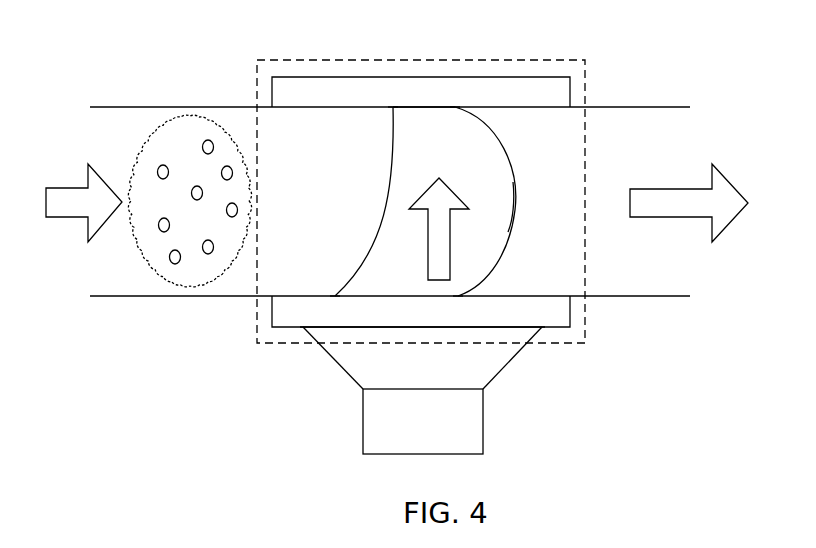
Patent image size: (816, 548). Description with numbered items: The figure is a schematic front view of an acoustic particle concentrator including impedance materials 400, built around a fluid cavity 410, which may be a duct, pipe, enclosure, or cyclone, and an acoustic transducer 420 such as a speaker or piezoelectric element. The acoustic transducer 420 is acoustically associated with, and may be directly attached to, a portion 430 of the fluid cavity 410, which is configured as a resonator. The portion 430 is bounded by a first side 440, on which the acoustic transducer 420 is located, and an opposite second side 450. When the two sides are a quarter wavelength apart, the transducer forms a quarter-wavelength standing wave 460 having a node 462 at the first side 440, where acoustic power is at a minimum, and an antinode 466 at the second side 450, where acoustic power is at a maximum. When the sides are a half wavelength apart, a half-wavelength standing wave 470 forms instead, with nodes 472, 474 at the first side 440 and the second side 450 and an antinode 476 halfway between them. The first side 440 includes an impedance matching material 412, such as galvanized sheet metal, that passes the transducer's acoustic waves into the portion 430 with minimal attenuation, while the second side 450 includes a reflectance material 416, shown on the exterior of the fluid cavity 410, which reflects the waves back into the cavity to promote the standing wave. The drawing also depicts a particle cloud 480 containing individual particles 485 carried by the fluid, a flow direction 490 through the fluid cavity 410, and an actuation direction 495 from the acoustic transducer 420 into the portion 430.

The acoustic particle concentrator including impedance materials 400 is at (660, 45).
The fluid cavity 410 is at (167, 107).
The impedance matching material 412 is at (572, 328).
The reflectance material 416 is at (571, 77).
The acoustic transducer 420 is at (363, 403).
The portion of the fluid cavity 430 is at (291, 60).
The first side 440 is at (363, 302).
The second side 450 is at (432, 107).
The quarter-wavelength standing wave 460 is at (385, 212).
The node 462 is at (333, 293).
The antinode 466 is at (392, 107).
The half-wavelength standing wave 470 is at (505, 155).
The node 472 is at (455, 302).
The node 474 is at (455, 107).
The antinode 476 is at (513, 200).
The particle cloud 480 is at (222, 133).
The particles 485 is at (231, 217).
The flow direction 490 is at (88, 217).
The actuation direction 495 is at (451, 247).